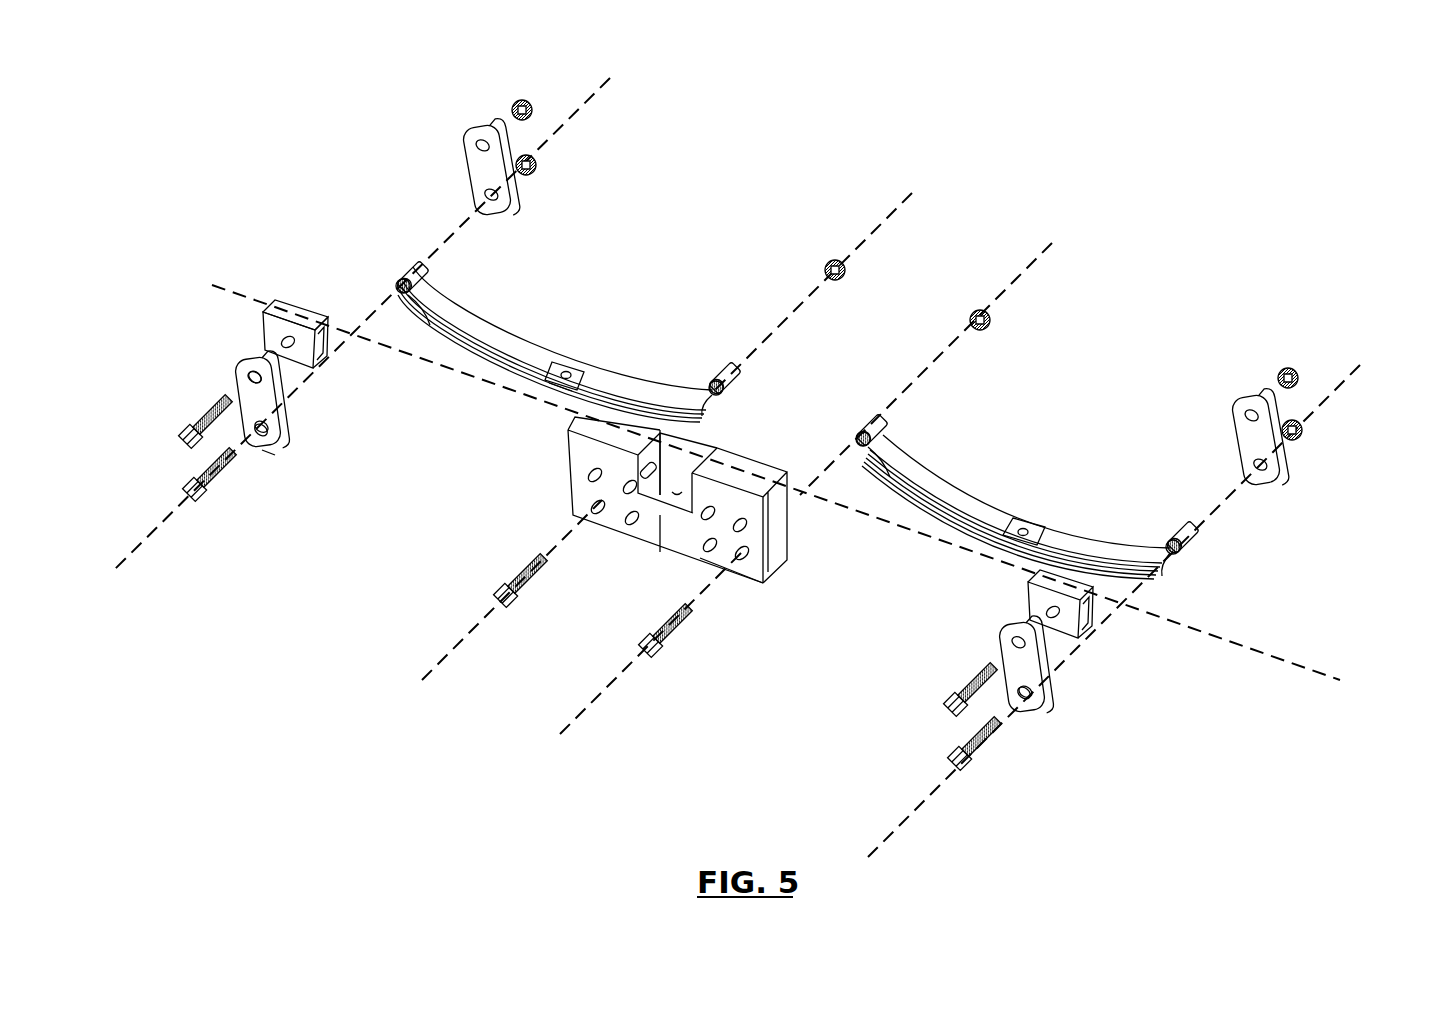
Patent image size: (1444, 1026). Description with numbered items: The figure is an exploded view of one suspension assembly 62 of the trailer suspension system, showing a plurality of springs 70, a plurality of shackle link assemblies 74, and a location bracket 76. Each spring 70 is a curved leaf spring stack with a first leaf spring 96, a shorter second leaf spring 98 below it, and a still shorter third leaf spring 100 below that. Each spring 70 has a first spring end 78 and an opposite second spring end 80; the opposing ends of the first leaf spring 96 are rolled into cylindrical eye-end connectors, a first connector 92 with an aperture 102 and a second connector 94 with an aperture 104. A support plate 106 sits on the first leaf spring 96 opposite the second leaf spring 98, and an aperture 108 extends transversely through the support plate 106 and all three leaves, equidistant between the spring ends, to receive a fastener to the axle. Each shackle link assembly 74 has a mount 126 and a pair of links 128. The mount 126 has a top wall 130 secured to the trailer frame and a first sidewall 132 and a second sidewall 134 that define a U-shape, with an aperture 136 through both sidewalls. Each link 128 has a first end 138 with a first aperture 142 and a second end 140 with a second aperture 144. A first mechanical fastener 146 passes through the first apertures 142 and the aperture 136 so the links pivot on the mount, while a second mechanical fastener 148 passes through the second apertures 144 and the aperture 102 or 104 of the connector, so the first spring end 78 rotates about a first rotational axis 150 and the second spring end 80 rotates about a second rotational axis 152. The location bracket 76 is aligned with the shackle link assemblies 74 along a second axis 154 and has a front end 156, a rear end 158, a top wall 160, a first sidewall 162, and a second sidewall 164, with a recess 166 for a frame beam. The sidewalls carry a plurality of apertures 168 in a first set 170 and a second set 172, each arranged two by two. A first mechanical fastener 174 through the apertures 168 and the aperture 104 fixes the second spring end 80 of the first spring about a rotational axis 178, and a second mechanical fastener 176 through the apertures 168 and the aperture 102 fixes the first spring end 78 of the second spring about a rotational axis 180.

The suspension assembly 62 is at (196, 62).
The spring 70 is at (782, 411).
The shackle link assembly 74 is at (739, 644).
The location bracket 76 is at (685, 532).
The first spring end 78 is at (400, 258).
The second spring end 80 is at (736, 400).
The first connector 92 is at (393, 277).
The second connector 94 is at (727, 370).
The first leaf spring 96 is at (450, 306).
The second leaf spring 98 is at (437, 318).
The third leaf spring 100 is at (488, 363).
The aperture 102 is at (430, 292).
The aperture 104 is at (723, 415).
The support plate 106 is at (553, 388).
The aperture 108 is at (582, 372).
The mount 126 is at (660, 475).
The link 128 is at (467, 126).
The top wall 130 is at (285, 307).
The first sidewall 132 is at (304, 370).
The second sidewall 134 is at (318, 362).
The aperture 136 is at (276, 340).
The first end 138 is at (243, 370).
The second end 140 is at (258, 442).
The first aperture 142 is at (273, 390).
The second aperture 144 is at (273, 437).
The first mechanical fastener 146 is at (198, 413).
The second mechanical fastener 148 is at (203, 470).
The first rotational axis 150 is at (585, 105).
The second rotational axis 152 is at (1332, 392).
The second axis 154 is at (1263, 656).
The front end 156 is at (566, 452).
The rear end 158 is at (806, 549).
The top wall 160 is at (777, 468).
The first sidewall 162 is at (760, 578).
The second sidewall 164 is at (778, 548).
The recess 166 is at (660, 508).
The apertures 168 is at (590, 503).
The first set 170 is at (606, 524).
The second set 172 is at (743, 580).
The first mechanical fastener 174 is at (505, 586).
The second mechanical fastener 176 is at (676, 625).
The rotational axis 178 is at (908, 195).
The rotational axis 180 is at (1046, 250).